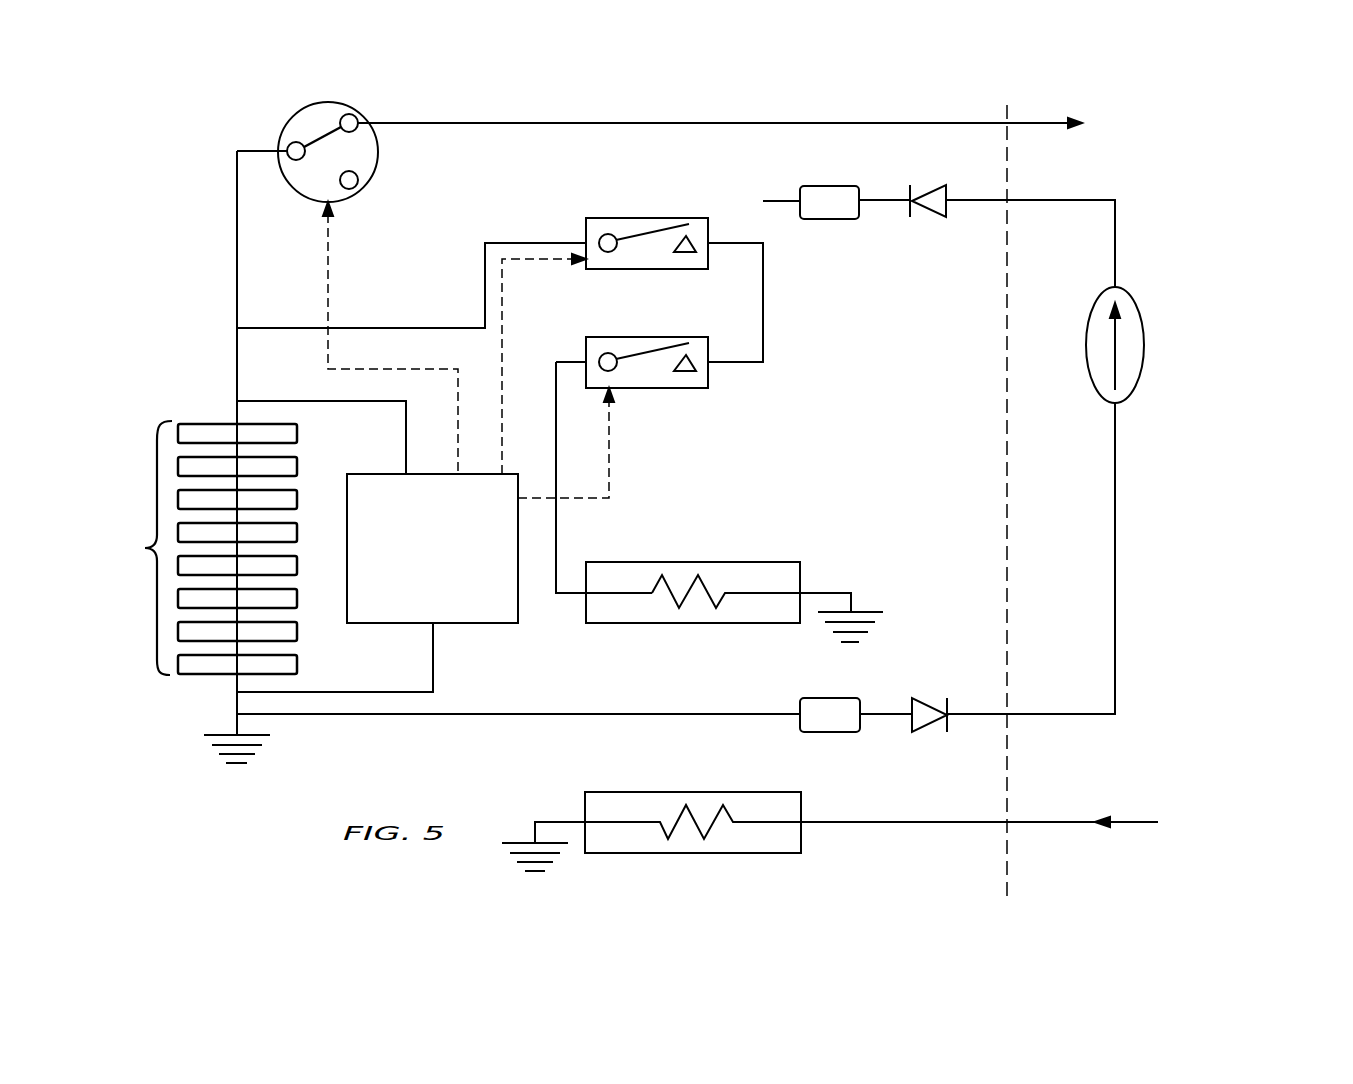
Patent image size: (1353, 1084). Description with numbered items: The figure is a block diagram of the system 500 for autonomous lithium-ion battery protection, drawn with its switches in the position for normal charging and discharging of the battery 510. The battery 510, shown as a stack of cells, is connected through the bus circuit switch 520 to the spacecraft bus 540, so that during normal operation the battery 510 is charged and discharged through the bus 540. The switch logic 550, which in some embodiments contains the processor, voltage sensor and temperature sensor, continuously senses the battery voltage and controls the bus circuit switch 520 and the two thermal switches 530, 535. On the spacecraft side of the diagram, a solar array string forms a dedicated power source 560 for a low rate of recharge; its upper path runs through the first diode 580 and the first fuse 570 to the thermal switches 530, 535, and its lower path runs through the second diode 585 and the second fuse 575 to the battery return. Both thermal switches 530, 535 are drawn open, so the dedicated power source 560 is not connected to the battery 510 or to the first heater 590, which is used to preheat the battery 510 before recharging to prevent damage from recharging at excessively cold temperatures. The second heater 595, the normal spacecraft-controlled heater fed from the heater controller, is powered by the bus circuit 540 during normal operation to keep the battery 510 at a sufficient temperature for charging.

The system 500 is at (1200, 680).
The battery 510 is at (188, 548).
The bus circuit switch 520 is at (290, 108).
The thermal switch 530 is at (586, 343).
The thermal switch 535 is at (586, 223).
The spacecraft bus 540 is at (1243, 122).
The switch logic 550 is at (518, 610).
The dedicated power source 560 is at (1130, 298).
The fuse 570 is at (830, 186).
The fuse 575 is at (830, 698).
The diode 580 is at (928, 190).
The diode 585 is at (930, 698).
The heater 590 is at (733, 562).
The heater 595 is at (690, 792).